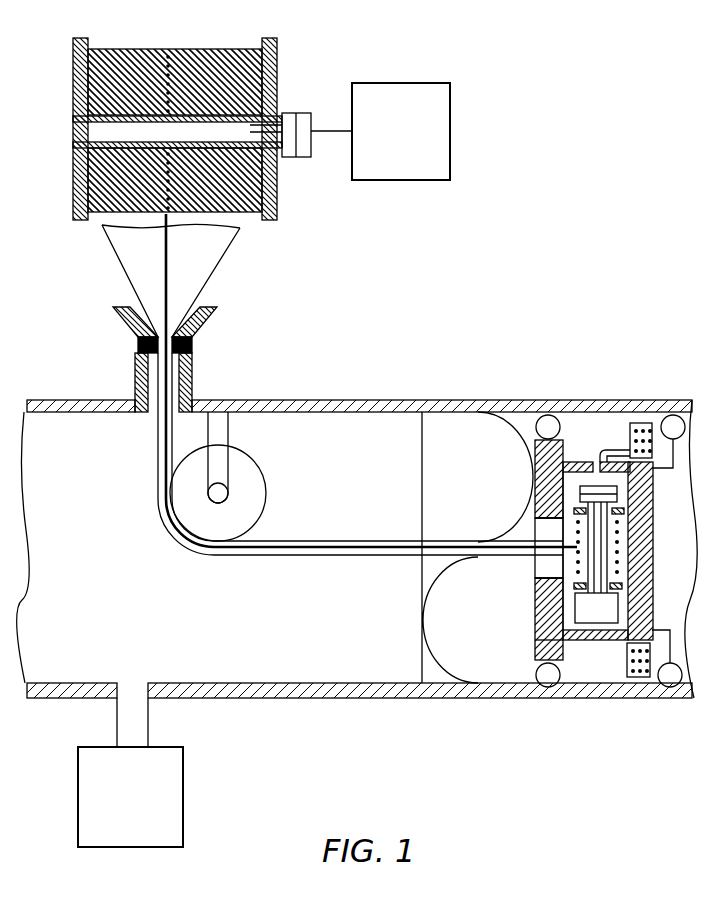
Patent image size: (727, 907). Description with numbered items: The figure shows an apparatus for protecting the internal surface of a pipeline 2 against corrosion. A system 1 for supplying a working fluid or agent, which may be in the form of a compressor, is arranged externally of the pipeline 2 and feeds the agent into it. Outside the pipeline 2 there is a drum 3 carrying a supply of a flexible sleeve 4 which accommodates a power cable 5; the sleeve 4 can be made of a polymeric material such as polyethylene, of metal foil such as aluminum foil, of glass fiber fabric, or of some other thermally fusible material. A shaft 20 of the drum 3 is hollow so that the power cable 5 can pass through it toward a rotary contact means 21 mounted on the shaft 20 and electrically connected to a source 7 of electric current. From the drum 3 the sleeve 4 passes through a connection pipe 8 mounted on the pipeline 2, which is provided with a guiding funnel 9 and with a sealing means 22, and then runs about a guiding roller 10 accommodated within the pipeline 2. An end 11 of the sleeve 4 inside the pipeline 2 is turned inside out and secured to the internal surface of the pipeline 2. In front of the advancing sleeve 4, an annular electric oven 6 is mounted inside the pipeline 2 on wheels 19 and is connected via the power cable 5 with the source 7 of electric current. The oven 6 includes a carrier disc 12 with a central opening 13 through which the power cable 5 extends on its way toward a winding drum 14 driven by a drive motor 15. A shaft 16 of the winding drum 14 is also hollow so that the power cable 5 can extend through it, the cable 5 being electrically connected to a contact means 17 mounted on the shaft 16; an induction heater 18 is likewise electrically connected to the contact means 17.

The system for supplying a working fluid 1 is at (130, 797).
The pipeline 2 is at (332, 400).
The drum 3 is at (88, 46).
The flexible sleeve 4 is at (118, 250).
The power cable 5 is at (208, 110).
The annular electric oven 6 is at (577, 456).
The source of electric current 7 is at (401, 131).
The connection pipe 8 is at (186, 383).
The guiding funnel 9 is at (124, 319).
The guiding roller 10 is at (252, 478).
The end of the sleeve 11 is at (443, 411).
The carrier disc 12 is at (533, 637).
The central opening 13 is at (533, 572).
The winding drum 14 is at (620, 511).
The drive motor 15 is at (598, 622).
The shaft of the winding drum 16 is at (598, 570).
The contact means 17 is at (617, 498).
The induction heater 18 is at (637, 423).
The wheels 19 is at (550, 688).
The shaft of the drum 20 is at (97, 131).
The rotary contact means 21 is at (287, 118).
The sealing means 22 is at (137, 343).